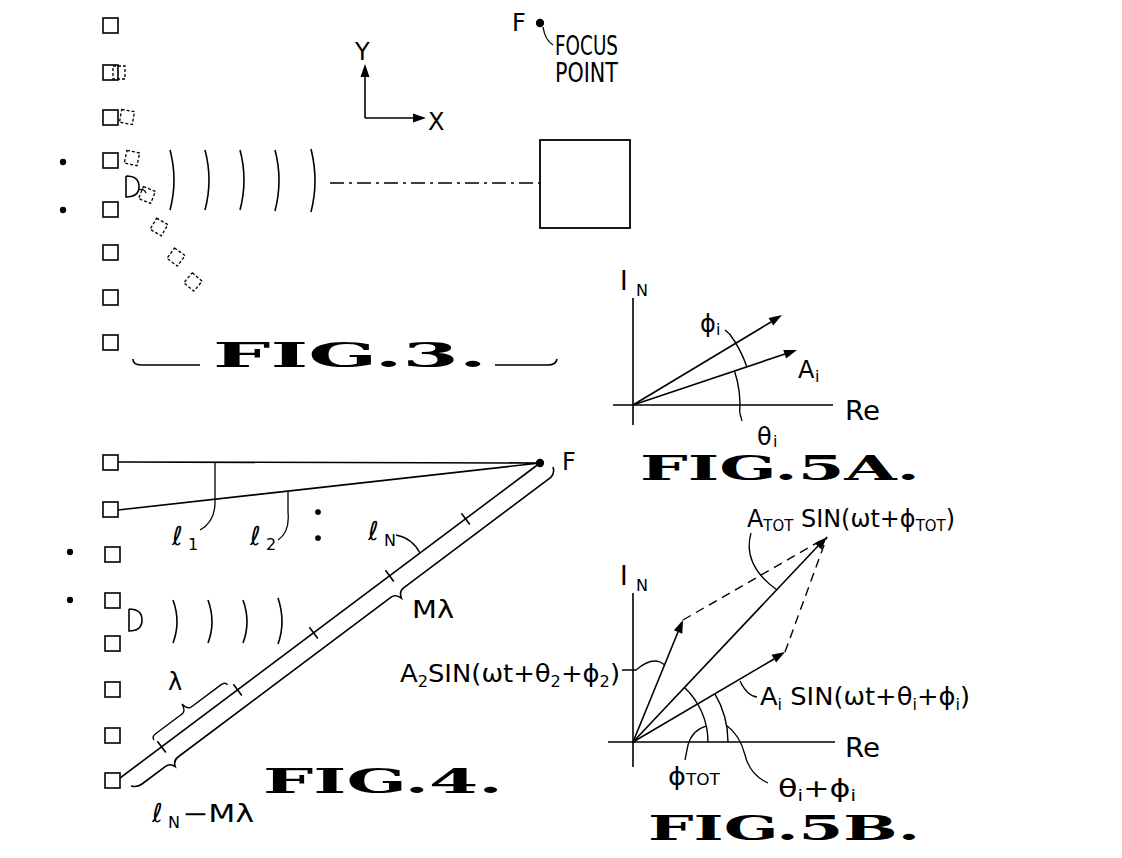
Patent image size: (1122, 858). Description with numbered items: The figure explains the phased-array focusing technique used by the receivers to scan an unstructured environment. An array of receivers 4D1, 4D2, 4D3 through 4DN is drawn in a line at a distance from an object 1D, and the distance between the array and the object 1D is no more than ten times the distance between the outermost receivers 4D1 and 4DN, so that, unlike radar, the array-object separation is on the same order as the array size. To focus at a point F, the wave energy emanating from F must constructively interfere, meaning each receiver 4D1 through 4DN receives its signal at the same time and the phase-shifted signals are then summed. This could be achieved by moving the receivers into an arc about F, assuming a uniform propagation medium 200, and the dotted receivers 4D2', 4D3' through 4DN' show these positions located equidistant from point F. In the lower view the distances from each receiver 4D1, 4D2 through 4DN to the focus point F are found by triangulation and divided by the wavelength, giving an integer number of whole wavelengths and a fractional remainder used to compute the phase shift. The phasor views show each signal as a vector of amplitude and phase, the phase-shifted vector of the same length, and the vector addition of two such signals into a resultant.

In FIG. 3, the receiver 4D1 is at (103, 26).
In FIG. 4, the receiver 4D1 is at (84, 463).
In FIG. 3, the receiver 4D2 is at (78, 75).
In FIG. 4, the receiver 4D2 is at (84, 511).
In FIG. 3, the receiver 4D3 is at (78, 123).
In FIG. 3, the receiver 4DN is at (84, 343).
In FIG. 4, the receiver 4DN is at (82, 783).
In FIG. 3, the receiver 4D2' is at (150, 57).
In FIG. 3, the receiver 4D3' is at (158, 103).
In FIG. 3, the receiver 4DN' is at (199, 224).
In FIG. 3, the object 1D is at (540, 210).
In FIG. 4, the object 1D is at (136, 612).
In FIG. 3, the propagation medium 200 is at (410, 301).